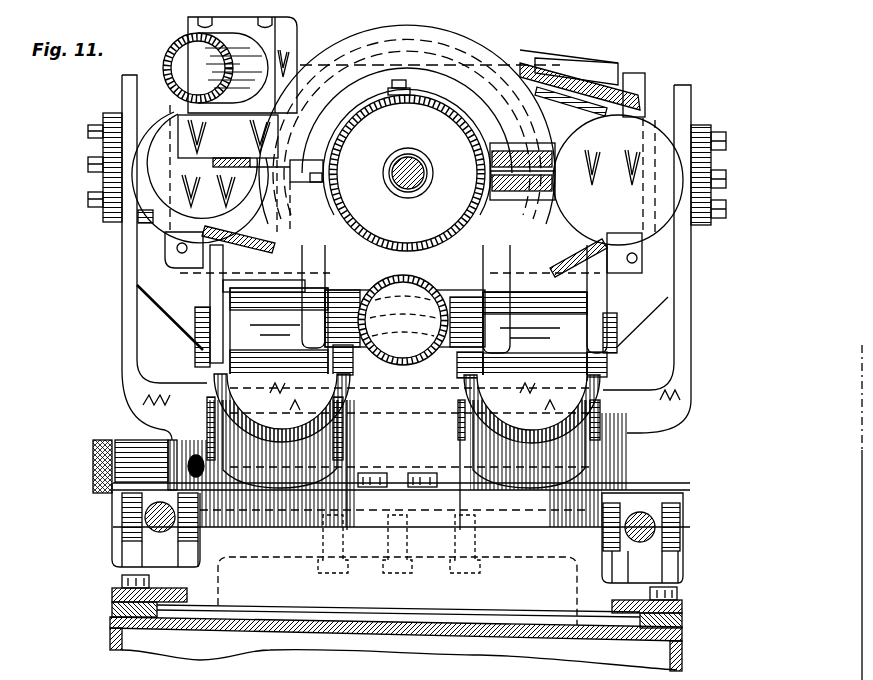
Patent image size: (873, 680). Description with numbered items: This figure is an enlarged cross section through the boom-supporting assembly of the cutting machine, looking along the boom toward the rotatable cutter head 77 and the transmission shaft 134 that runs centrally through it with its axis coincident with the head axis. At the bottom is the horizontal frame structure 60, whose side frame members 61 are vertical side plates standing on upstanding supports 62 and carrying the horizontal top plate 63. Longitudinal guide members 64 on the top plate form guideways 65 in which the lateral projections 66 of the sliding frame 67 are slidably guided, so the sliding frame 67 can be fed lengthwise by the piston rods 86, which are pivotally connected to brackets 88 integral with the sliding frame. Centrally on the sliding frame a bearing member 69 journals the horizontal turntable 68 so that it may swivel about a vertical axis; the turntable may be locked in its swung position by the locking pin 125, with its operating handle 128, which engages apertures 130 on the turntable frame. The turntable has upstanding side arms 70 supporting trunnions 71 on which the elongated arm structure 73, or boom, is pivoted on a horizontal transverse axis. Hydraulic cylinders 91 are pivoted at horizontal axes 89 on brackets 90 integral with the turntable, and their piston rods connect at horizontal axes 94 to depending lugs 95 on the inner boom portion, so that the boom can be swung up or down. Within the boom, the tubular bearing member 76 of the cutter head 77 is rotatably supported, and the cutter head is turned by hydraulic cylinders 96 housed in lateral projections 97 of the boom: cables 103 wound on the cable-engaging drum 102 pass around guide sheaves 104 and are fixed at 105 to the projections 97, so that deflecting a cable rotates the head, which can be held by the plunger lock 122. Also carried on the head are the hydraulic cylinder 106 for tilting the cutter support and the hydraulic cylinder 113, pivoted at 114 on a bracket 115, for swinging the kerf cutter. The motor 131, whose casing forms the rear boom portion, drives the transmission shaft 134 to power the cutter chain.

The horizontal frame structure 60 is at (683, 664).
The horizontal side frame members 61 is at (110, 640).
The upstanding supports 62 is at (684, 649).
The horizontal top plate 63 is at (177, 615).
The longitudinal guide members 64 is at (112, 592).
The longitudinal guideways 65 is at (112, 612).
The lateral projections 66 is at (396, 641).
The sliding frame 67 is at (382, 597).
The horizontal turntable 68 is at (612, 457).
The bearing member 69 is at (397, 570).
The upstanding side arms 70 is at (122, 320).
The trunnions 71 is at (103, 178).
The elongated arm structure 73 is at (630, 73).
The tubular bearing member 76 is at (440, 100).
The rotatable cutter head 77 is at (520, 92).
The piston rods 86 is at (125, 540).
The brackets 88 is at (125, 512).
The horizontal axes 89 is at (200, 418).
The brackets 90 is at (447, 443).
The hydraulic cylinders 91 is at (463, 410).
The horizontal axes 94 is at (207, 317).
The depending lugs 95 is at (213, 350).
The hydraulic cylinders 96 is at (178, 230).
The lateral projections 97 is at (138, 222).
The cable-engaging drum 102 is at (537, 88).
The cables 103 is at (205, 240).
The guide sheaves 104 is at (625, 92).
The cable fixing points 105 is at (203, 275).
The hydraulic cylinder 106 is at (417, 368).
The hydraulic cylinder 113 is at (167, 48).
The pivotal mounting 114 is at (249, 168).
The bracket 115 is at (297, 48).
The plunger lock 122 is at (165, 462).
The locking pin 125 is at (166, 466).
The operating handle 128 is at (95, 456).
The apertures 130 is at (198, 483).
The motor 131 is at (423, 670).
The transmission shaft 134 is at (400, 163).